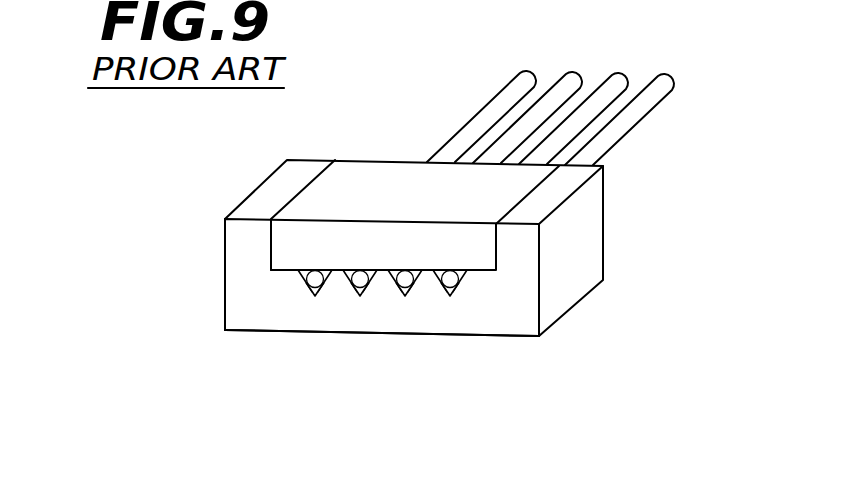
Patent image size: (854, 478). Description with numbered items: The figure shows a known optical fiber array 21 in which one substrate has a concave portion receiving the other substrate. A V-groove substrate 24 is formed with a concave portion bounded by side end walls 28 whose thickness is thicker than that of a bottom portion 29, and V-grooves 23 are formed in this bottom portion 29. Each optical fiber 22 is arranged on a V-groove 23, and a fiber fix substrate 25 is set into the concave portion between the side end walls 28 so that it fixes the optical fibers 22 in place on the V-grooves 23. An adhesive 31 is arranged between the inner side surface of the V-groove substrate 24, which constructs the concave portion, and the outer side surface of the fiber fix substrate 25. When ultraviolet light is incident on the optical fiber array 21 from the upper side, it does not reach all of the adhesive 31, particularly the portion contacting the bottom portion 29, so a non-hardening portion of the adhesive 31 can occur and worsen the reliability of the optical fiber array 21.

The optical fiber array 21 is at (612, 213).
The optical fiber 22 is at (357, 296).
The V-groove 23 is at (420, 297).
The V-groove substrate 24 is at (512, 315).
The fiber fix substrate 25 is at (360, 176).
The side end wall 28 is at (243, 253).
The bottom portion 29 is at (320, 312).
The adhesive 31 is at (270, 244).